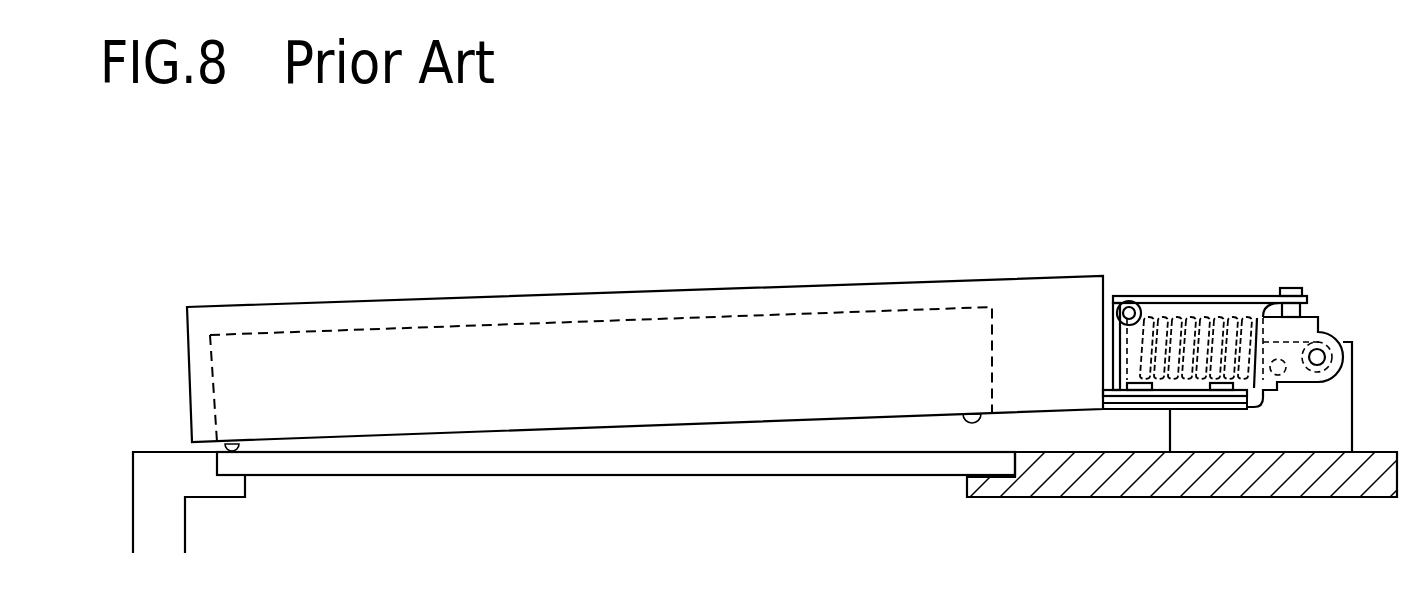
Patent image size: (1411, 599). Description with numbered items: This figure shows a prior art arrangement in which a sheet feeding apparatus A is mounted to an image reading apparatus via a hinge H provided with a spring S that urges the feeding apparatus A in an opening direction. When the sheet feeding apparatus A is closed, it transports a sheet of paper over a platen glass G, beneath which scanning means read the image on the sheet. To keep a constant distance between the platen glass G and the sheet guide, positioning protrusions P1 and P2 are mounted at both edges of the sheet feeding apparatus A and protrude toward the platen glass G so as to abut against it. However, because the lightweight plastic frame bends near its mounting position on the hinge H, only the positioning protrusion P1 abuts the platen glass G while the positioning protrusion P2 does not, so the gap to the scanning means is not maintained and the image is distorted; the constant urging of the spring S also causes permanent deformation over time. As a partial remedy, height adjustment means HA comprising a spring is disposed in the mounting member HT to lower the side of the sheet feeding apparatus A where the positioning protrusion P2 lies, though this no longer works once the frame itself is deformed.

The sheet feeding apparatus A is at (1013, 278).
The platen glass G is at (596, 465).
The positioning protrusion P1 is at (240, 447).
The positioning protrusion P2 is at (966, 424).
The mounting member HT is at (1227, 403).
The hinge H is at (1362, 328).
The spring S is at (1188, 320).
The height adjustment means HA is at (1295, 287).